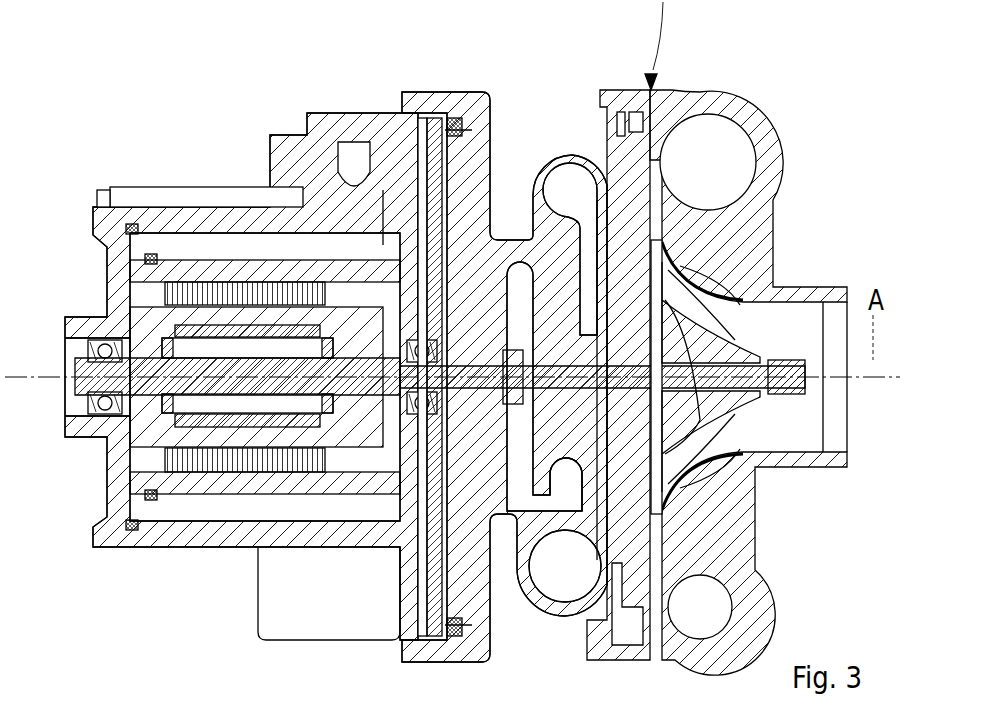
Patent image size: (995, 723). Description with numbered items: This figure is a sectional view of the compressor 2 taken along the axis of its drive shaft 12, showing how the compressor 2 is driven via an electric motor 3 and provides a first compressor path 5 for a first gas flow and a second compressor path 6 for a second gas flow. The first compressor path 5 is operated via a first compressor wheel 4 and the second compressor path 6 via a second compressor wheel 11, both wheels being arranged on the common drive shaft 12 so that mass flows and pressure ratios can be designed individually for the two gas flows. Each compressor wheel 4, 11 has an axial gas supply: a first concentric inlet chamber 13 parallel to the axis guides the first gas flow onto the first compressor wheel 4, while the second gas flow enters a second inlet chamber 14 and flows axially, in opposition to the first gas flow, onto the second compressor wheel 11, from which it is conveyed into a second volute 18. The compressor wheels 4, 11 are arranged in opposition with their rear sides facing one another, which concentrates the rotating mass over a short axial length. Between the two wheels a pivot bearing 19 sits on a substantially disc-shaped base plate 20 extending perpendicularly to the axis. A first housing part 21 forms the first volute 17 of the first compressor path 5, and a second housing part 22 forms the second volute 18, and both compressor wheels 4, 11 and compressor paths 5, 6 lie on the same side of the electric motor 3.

The compressor 2 is at (846, 181).
The electric motor 3 is at (206, 188).
The first compressor wheel 4 is at (670, 420).
The first compressor path 5 is at (781, 343).
The second compressor path 6 is at (548, 333).
The second compressor wheel 11 is at (571, 397).
The drive shaft 12 is at (802, 360).
The first inlet chamber 13 is at (808, 415).
The second inlet chamber 14 is at (519, 275).
The first volute 17 is at (718, 145).
The second volute 18 is at (568, 190).
The pivot bearing 19 is at (700, 417).
The base plate 20 is at (627, 145).
The first housing part 21 is at (693, 98).
The second housing part 22 is at (442, 100).